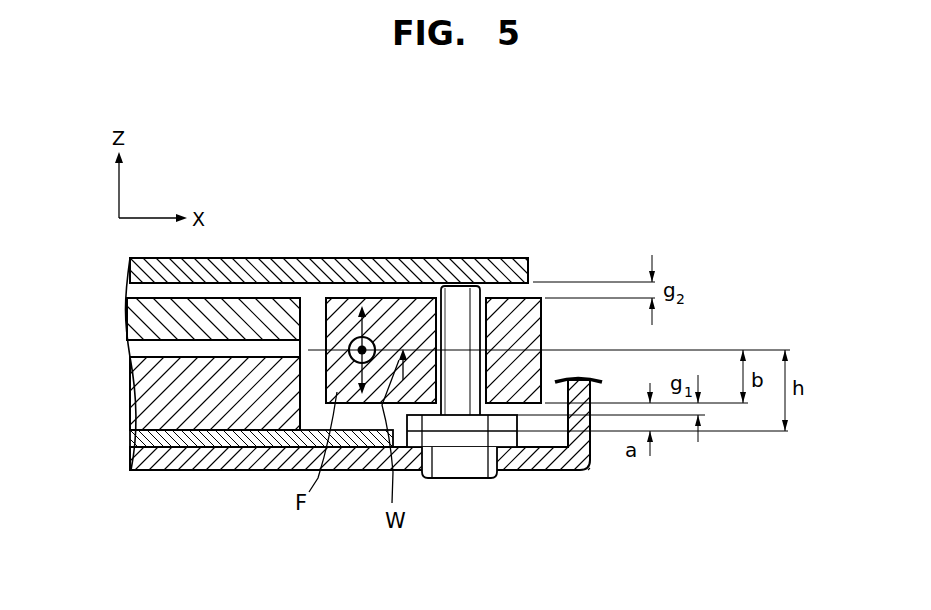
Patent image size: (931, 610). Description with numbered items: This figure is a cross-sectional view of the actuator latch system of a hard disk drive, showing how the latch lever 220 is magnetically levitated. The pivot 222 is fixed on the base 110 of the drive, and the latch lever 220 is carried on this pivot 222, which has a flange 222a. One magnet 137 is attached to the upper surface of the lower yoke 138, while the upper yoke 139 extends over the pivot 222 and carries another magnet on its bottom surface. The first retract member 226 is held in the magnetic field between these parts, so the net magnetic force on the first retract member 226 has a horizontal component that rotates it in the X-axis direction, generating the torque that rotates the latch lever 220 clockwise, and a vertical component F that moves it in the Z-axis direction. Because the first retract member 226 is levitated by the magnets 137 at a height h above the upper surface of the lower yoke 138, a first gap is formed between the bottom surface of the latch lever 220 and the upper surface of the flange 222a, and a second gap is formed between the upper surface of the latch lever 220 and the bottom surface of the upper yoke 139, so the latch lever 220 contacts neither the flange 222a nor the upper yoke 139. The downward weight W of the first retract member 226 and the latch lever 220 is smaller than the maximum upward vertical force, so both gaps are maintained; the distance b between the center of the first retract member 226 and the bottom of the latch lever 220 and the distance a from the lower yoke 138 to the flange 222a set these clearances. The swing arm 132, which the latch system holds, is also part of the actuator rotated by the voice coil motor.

The base 110 is at (347, 470).
The swing arm 132 is at (132, 320).
The magnet 137 is at (145, 395).
The lower yoke 138 is at (250, 470).
The upper yoke 139 is at (435, 268).
The latch lever 220 is at (527, 385).
The pivot 222 is at (462, 413).
The flange 222a is at (442, 437).
The first retract member 226 is at (352, 338).